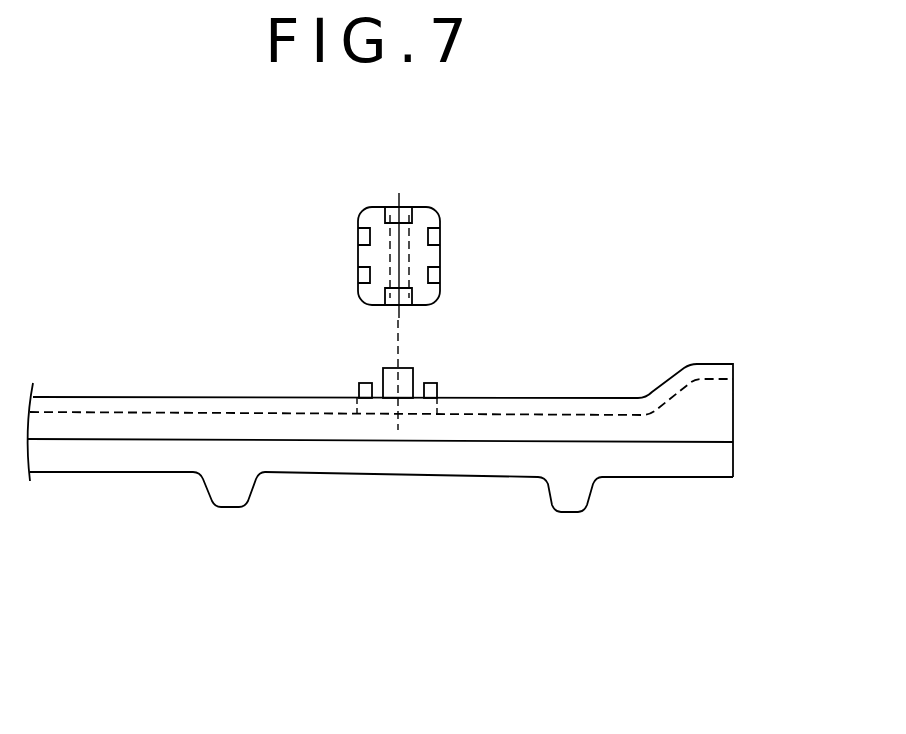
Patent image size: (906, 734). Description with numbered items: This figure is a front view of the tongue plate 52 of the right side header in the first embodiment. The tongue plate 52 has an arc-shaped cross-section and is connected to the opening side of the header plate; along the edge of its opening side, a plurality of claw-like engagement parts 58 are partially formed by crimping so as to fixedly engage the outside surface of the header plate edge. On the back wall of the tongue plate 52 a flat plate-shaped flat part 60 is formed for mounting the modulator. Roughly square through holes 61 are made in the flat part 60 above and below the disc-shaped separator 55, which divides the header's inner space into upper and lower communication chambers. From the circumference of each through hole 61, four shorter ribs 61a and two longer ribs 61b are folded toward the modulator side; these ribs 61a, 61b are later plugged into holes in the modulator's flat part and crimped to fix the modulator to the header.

The tongue plate 52 is at (424, 442).
The separator 55 is at (410, 257).
The claw-like engagement parts 58 is at (570, 493).
The flat part 60 is at (167, 397).
The through holes 61 is at (401, 345).
The ribs (engagement pieces) 61a is at (358, 238).
The ribs (engagement pieces) 61b is at (393, 212).